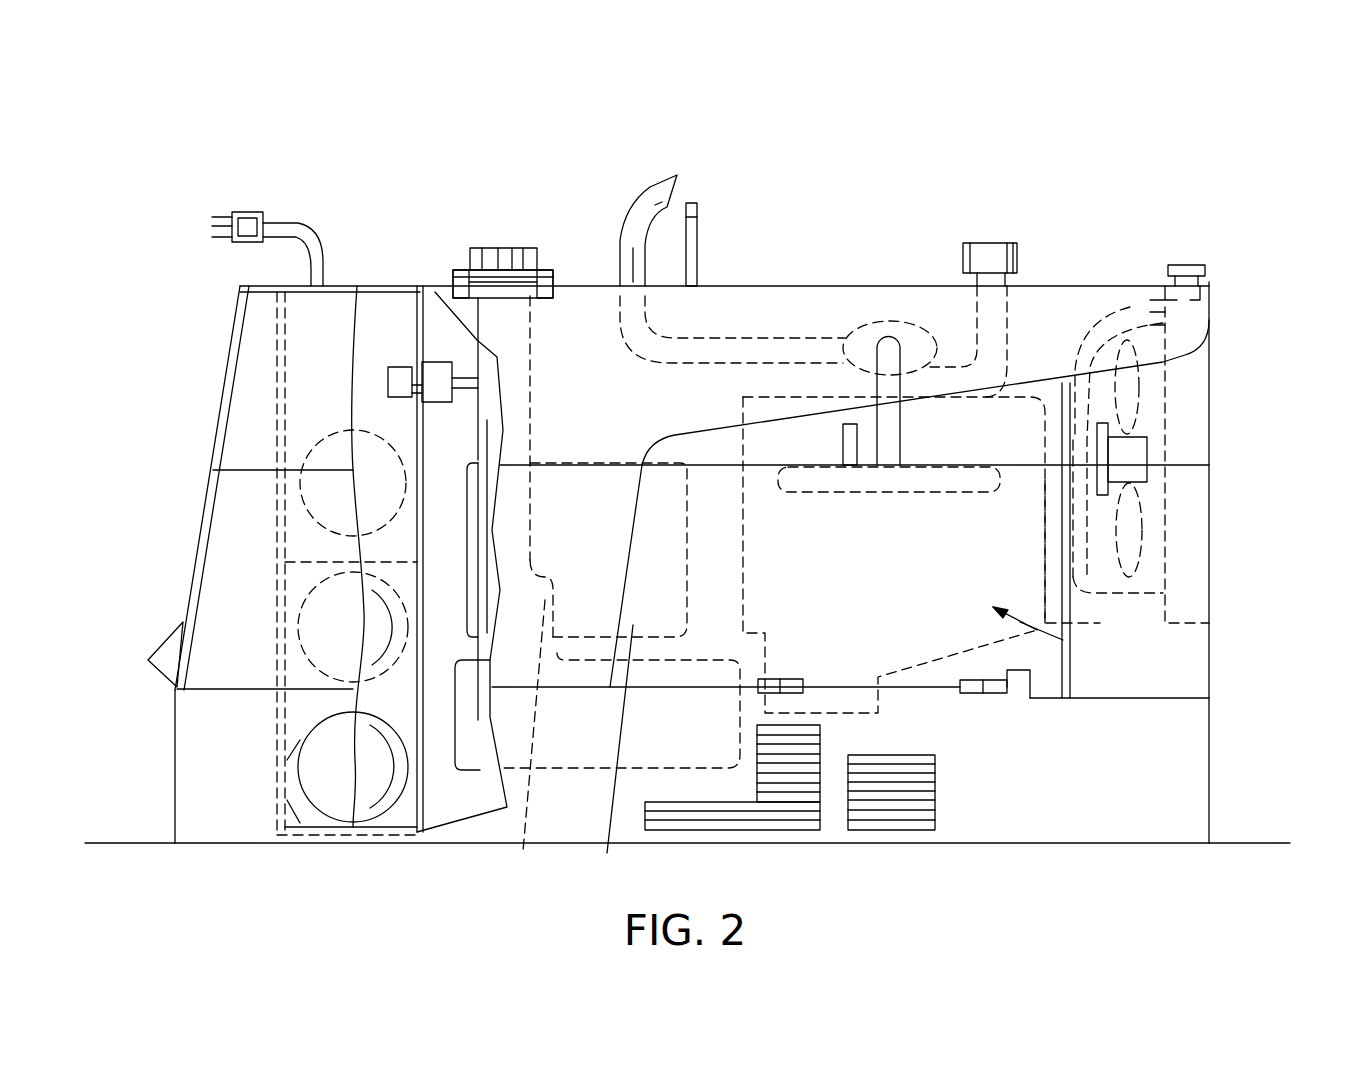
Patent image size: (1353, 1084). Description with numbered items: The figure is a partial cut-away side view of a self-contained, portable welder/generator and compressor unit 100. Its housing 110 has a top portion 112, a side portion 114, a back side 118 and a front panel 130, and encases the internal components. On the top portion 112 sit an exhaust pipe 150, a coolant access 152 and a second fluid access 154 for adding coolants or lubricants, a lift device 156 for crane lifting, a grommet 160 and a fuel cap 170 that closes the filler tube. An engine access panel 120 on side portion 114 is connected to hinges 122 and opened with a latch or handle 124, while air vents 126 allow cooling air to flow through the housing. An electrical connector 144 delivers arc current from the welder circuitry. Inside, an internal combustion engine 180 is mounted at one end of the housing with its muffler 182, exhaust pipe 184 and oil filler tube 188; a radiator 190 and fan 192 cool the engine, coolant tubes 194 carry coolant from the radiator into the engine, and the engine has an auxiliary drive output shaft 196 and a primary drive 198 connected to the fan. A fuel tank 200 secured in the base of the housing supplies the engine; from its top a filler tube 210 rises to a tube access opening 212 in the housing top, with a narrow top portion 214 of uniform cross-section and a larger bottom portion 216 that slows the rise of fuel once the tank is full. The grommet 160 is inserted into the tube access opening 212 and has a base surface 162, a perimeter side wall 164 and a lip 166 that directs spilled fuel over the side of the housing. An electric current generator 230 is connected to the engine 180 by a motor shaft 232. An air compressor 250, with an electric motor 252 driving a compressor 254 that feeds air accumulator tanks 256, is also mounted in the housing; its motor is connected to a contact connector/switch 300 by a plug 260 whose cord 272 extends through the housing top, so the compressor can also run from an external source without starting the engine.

The welder/generator and compressor unit 100 is at (897, 183).
The housing 110 is at (1212, 568).
The top portion 112 is at (833, 284).
The side portion 114 is at (1185, 790).
The back side 118 is at (1211, 750).
The engine access panel 120 is at (854, 605).
The hinges 122 is at (803, 692).
The latch or handle 124 is at (853, 437).
The air vents 126 is at (913, 813).
The front panel 130 is at (175, 758).
The electrical connector 144 is at (166, 643).
The exhaust pipe 150 is at (660, 187).
The coolant access 152 is at (1195, 263).
The fluid access 154 is at (1007, 242).
The lift device 156 is at (697, 207).
The grommet 160 is at (457, 270).
The base surface 162 is at (535, 285).
The side wall 164 is at (463, 268).
The lip 166 is at (496, 282).
The fuel cap 170 is at (513, 248).
The internal combustion engine 180 is at (1070, 650).
The muffler 182 is at (883, 320).
The exhaust pipe 184 is at (645, 262).
The oil filler tube 188 is at (1012, 315).
The radiator 190 is at (1200, 380).
The fan 192 is at (1140, 400).
The coolant tubes 194 is at (1128, 307).
The auxiliary drive output shaft 196 is at (1063, 540).
The primary drive 198 is at (1090, 450).
The fuel tank 200 is at (473, 755).
The filler tube 210 is at (497, 437).
The tube access opening 212 is at (532, 300).
The top portion 214 is at (530, 360).
The bottom portion 216 is at (530, 745).
The electric current generator 230 is at (463, 575).
The motor shaft 232 is at (748, 587).
The air compressor 250 is at (373, 348).
The electric motor 252 is at (300, 498).
The compressor 254 is at (370, 548).
The air accumulator tanks 256 is at (370, 640).
The plug 260 is at (273, 220).
The cord 272 is at (367, 382).
The contact connector/switch 300 is at (455, 390).